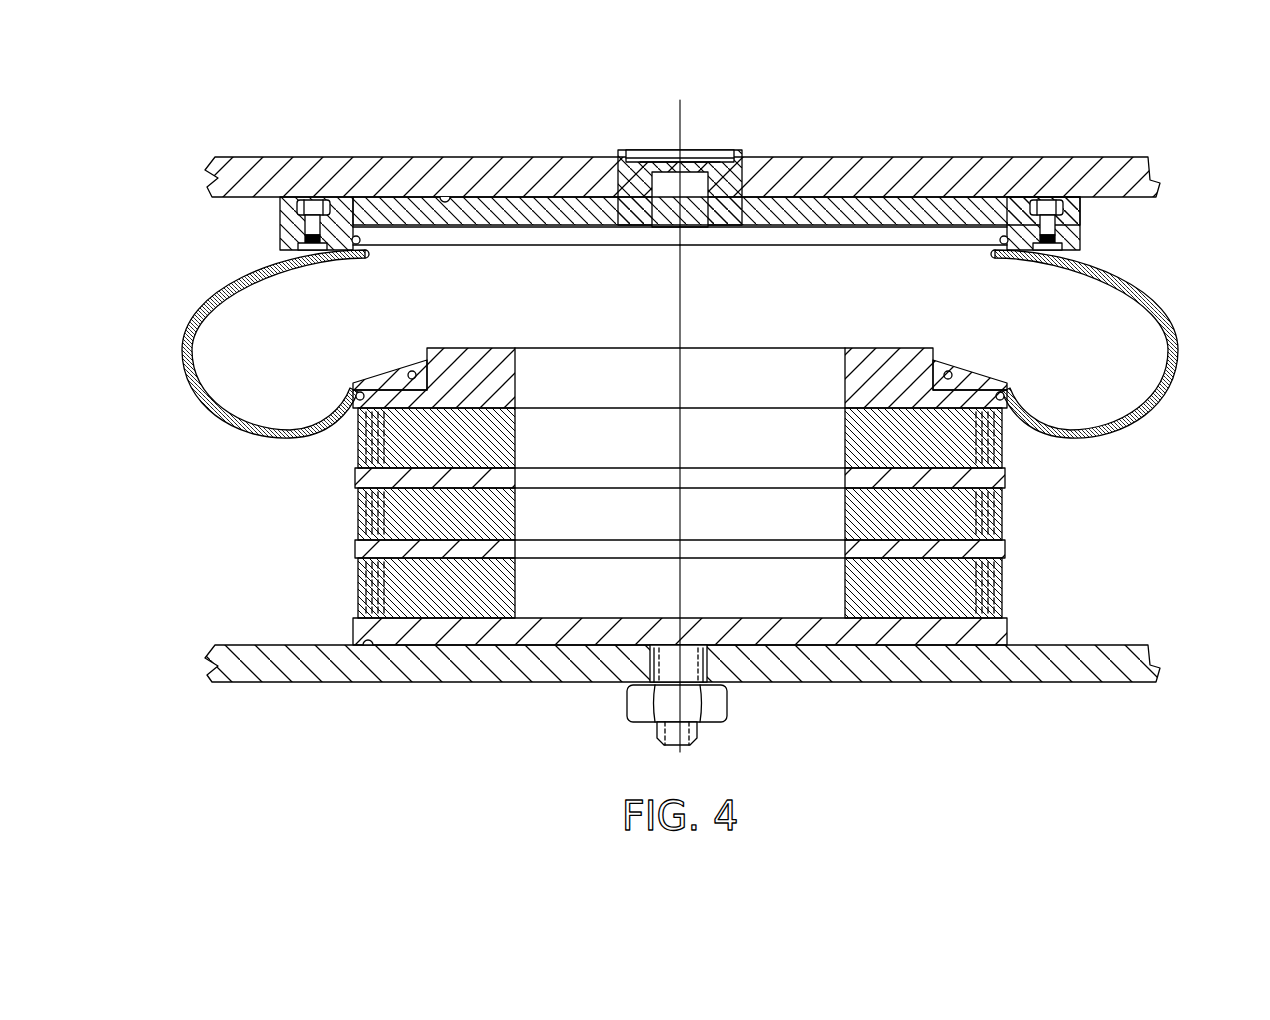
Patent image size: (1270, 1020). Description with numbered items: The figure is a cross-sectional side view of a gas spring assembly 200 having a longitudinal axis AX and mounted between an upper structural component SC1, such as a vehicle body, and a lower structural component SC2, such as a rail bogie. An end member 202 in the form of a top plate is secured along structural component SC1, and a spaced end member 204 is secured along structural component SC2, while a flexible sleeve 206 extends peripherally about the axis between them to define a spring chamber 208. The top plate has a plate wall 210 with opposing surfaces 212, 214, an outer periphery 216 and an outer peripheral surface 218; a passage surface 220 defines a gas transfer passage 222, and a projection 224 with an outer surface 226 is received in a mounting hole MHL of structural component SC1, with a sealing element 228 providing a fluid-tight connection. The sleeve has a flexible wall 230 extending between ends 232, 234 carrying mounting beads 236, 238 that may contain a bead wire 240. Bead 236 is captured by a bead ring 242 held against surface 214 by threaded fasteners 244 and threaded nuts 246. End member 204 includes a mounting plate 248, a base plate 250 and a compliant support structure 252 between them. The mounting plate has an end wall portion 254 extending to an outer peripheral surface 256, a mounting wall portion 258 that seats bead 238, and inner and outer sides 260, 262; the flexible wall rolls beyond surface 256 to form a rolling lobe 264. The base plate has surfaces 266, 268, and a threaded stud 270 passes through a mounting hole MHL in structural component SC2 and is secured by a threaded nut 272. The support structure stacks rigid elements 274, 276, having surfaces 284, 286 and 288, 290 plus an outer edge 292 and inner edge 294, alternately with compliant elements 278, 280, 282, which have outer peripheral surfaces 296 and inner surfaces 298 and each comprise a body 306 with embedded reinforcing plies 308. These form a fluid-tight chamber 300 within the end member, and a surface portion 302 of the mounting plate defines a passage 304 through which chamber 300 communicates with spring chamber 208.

The gas spring assembly 200 is at (1182, 222).
The end member 202 is at (868, 194).
The end member 204 is at (706, 511).
The flexible spring member or sleeve 206 is at (792, 337).
The spring chamber 208 is at (534, 337).
The plate wall 210 is at (716, 162).
The surface 212 is at (452, 196).
The surface 214 is at (572, 220).
The outer periphery 216 is at (292, 192).
The outer peripheral surface 218 is at (248, 175).
The passage surface 220 is at (677, 392).
The gas transfer passage 222 is at (671, 146).
The projection or boss 224 is at (635, 200).
The outer surface 226 is at (727, 200).
The sealing element 228 is at (630, 154).
The flexible wall 230 is at (190, 376).
The end 232 is at (372, 256).
The end 234 is at (668, 364).
The mounting bead 236 is at (352, 236).
The mounting bead 238 is at (400, 372).
The bead wire 240 is at (353, 254).
The bead ring 242 is at (1082, 256).
The threaded fastener 244 is at (300, 228).
The threaded nut 246 is at (1046, 204).
The mounting plate 248 is at (880, 346).
The base plate 250 is at (458, 650).
The compliant support structure 252 is at (975, 513).
The end wall portion 254 is at (955, 400).
The outer peripheral edge or surface 256 is at (1004, 390).
The mounting wall portion 258 is at (895, 378).
The inner side 260 is at (972, 396).
The outer side 262 is at (518, 348).
The rolling lobe 264 is at (268, 432).
The surface 266 is at (692, 676).
The surface 268 is at (378, 641).
The threaded stud 270 is at (658, 733).
The threaded nut 272 is at (670, 721).
The rigid element 274 is at (917, 484).
The rigid element 276 is at (885, 562).
The compliant element 278 is at (1000, 444).
The compliant element 280 is at (1004, 512).
The compliant element 282 is at (1004, 588).
The surface 284 is at (498, 462).
The surface 286 is at (490, 488).
The surface 288 is at (490, 536).
The surface 290 is at (490, 564).
The outer peripheral surface or edge 292 is at (1006, 483).
The inner surface or edge 294 is at (843, 464).
The outer peripheral surface 296 is at (1003, 616).
The inner surface 298 is at (843, 434).
The chamber 300 is at (744, 590).
The surface portion 302 is at (843, 386).
The passage 304 is at (644, 370).
The body 306 is at (417, 513).
The reinforcing plies 308 is at (358, 580).
The structural component SC1 is at (243, 166).
The structural component SC2 is at (254, 658).
The mounting hole MHL is at (744, 168).
The longitudinal axis AX is at (680, 316).